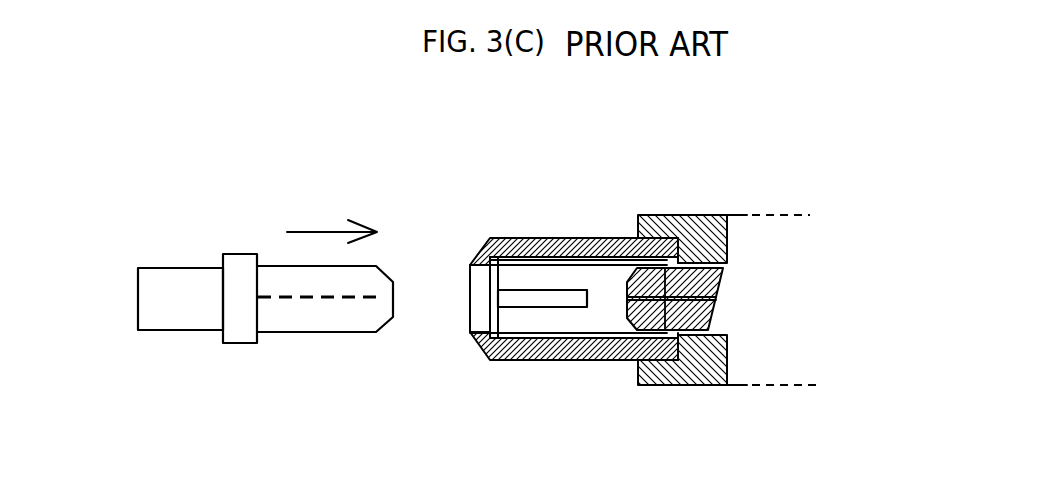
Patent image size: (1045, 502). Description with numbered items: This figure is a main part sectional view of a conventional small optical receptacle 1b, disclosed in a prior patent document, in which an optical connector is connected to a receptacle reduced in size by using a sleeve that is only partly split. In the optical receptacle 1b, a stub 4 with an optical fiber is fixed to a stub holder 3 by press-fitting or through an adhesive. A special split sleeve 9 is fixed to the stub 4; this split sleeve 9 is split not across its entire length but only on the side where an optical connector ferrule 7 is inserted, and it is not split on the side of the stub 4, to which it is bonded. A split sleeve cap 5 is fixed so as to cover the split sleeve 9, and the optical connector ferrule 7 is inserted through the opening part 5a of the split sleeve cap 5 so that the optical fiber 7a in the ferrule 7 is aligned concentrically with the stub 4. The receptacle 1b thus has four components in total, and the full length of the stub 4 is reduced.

The optical connector ferrule 7 is at (277, 265).
The optical fiber 7a is at (321, 302).
The split sleeve cap 5 is at (565, 247).
The opening part 5a is at (472, 263).
The split sleeve 9 is at (528, 265).
The optical receptacle 1b is at (615, 192).
The stub holder 3 is at (707, 215).
The stub 4 is at (715, 307).